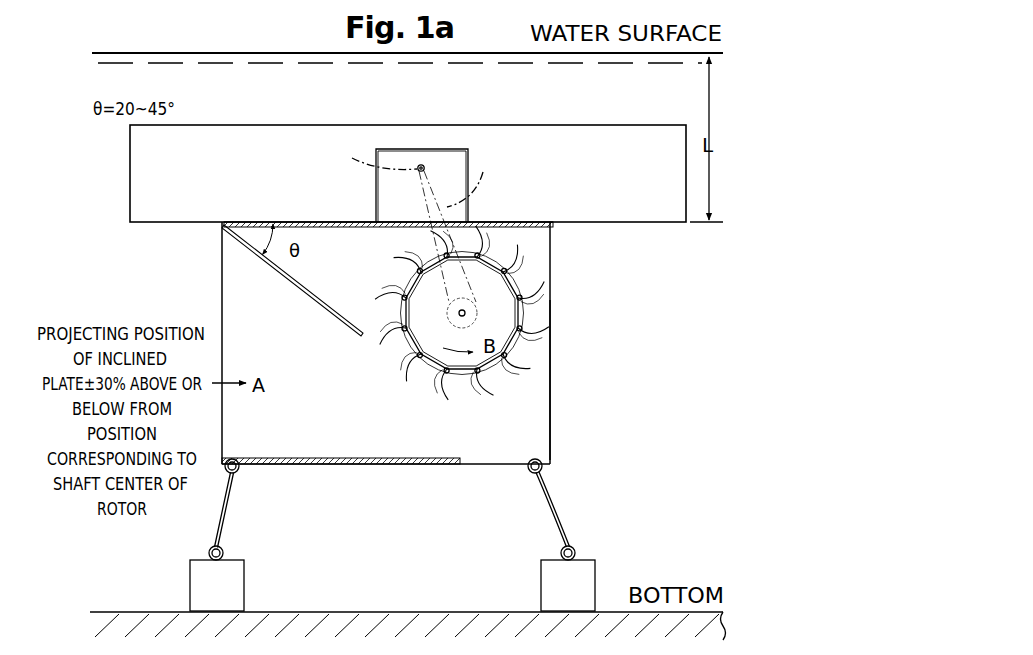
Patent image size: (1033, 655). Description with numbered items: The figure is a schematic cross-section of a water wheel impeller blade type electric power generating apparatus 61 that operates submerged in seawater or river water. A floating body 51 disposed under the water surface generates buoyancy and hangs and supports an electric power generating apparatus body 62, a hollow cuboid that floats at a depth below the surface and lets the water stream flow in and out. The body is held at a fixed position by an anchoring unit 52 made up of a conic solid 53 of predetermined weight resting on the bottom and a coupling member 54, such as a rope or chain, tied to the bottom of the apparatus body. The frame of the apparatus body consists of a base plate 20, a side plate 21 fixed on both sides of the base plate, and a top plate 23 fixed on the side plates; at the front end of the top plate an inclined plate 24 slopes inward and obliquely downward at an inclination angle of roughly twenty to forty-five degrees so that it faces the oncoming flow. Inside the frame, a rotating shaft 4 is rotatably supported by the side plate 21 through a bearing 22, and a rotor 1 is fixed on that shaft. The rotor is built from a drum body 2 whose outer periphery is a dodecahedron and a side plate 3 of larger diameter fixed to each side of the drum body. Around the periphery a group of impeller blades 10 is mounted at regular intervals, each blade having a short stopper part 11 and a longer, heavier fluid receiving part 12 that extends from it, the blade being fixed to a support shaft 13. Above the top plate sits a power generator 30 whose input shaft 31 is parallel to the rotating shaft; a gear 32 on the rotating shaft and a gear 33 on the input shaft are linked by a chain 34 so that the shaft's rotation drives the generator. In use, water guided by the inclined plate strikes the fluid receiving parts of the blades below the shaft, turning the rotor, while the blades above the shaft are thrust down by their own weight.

The rotor 1 is at (506, 250).
The drum body 2 is at (476, 372).
The side plate 3 is at (516, 262).
The rotating shaft 4 is at (466, 313).
The impeller blade 10 is at (403, 282).
The stopper part 11 is at (408, 275).
The fluid receiving part 12 is at (418, 256).
The support shaft 13 is at (528, 312).
The base plate 20 is at (283, 457).
The side plate 21 is at (333, 222).
The bearing 22 is at (458, 313).
The top plate 23 is at (268, 222).
The inclined plate 24 is at (318, 296).
The power generator 30 is at (450, 155).
The input shaft 31 is at (419, 164).
The gear 32 is at (455, 318).
The gear 33 is at (372, 158).
The chain 34 is at (478, 182).
The floating body 51 is at (665, 224).
The anchoring unit 52 is at (576, 528).
The conic solid 53 is at (245, 572).
The coupling member 54 is at (227, 506).
The water wheel impeller blade type electric power generating apparatus 61 is at (178, 302).
The electric power generating apparatus body 62 is at (558, 382).